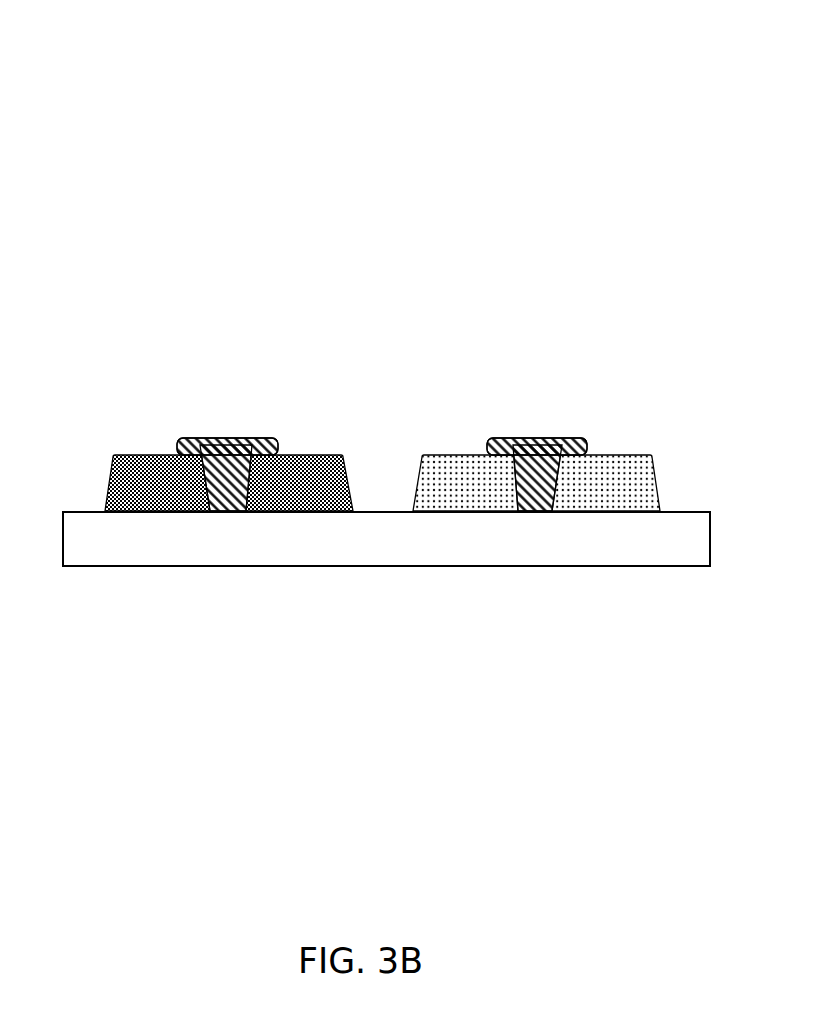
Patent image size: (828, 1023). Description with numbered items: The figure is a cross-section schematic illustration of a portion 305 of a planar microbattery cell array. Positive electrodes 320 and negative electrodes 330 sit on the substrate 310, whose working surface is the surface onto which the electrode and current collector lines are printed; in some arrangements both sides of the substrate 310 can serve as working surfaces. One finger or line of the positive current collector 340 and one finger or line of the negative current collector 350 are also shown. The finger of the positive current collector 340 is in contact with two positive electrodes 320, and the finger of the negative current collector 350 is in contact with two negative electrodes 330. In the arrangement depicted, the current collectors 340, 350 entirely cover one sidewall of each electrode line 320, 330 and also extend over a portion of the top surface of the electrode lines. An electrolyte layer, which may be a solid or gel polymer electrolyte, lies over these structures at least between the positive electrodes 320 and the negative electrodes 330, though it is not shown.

The portion 305 is at (141, 167).
The substrate 310 is at (136, 556).
The positive electrodes 320 is at (303, 490).
The negative electrodes 330 is at (620, 487).
The positive current collector 340 is at (232, 458).
The negative current collector 350 is at (537, 458).